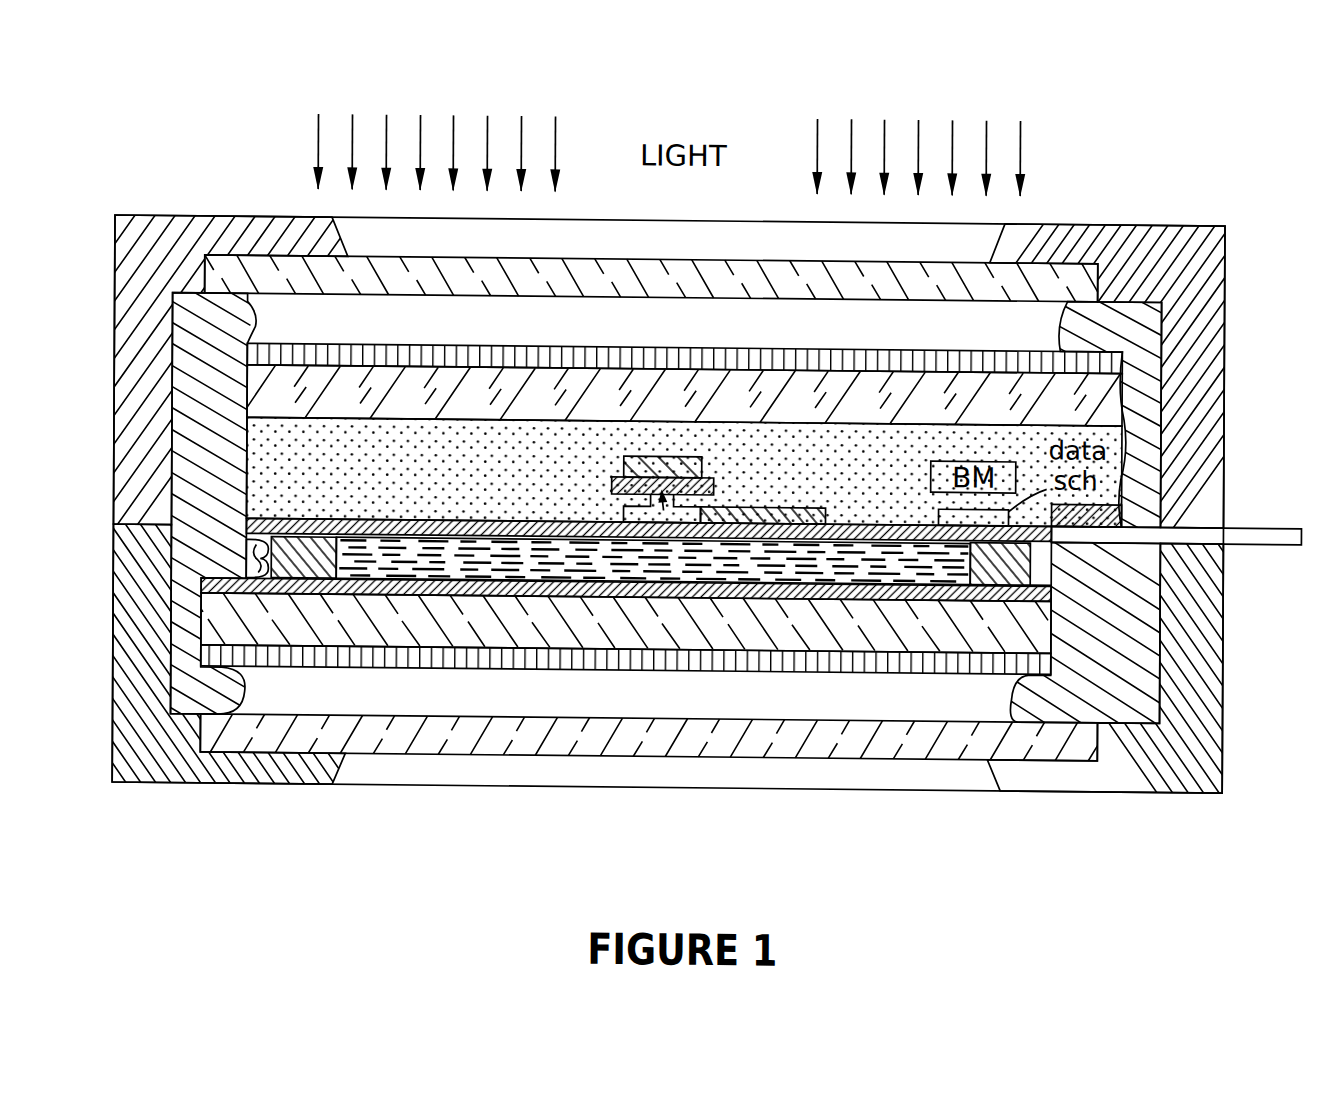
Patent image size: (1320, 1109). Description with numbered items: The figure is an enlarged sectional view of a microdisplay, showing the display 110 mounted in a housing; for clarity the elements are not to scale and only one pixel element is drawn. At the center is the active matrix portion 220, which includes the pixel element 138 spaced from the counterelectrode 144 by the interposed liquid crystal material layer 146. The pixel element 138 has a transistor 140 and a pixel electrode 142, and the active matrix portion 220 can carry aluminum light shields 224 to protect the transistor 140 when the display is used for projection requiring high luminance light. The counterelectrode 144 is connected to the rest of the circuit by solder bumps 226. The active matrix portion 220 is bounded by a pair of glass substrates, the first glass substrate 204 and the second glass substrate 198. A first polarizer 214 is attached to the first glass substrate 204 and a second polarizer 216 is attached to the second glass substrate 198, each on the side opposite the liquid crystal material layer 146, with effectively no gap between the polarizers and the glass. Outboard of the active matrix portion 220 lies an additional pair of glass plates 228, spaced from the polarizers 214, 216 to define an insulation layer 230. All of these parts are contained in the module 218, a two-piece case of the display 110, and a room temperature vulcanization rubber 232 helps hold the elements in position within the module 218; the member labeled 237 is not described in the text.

The display 110 is at (1117, 188).
The module 218 is at (237, 207).
The glass plates 228 is at (399, 293).
The first polarizer 214 is at (405, 340).
The insulation layer 230 is at (663, 333).
The room temperature vulcanization (RTV) rubber 232 is at (1118, 328).
The first glass substrate 204 is at (1113, 400).
The active matrix portion 220 is at (268, 457).
The transistor 140 is at (666, 451).
The aluminum light shields 224 is at (613, 473).
The pixel element 138 is at (712, 494).
The pixel electrode 142 is at (815, 499).
The liquid crystal material layer 146 is at (503, 544).
The solder bumps 226 is at (252, 554).
The counterelectrode 144 is at (202, 585).
The second glass substrate 198 is at (428, 621).
The second polarizer 216 is at (655, 665).
The spacer frame 237 is at (187, 652).